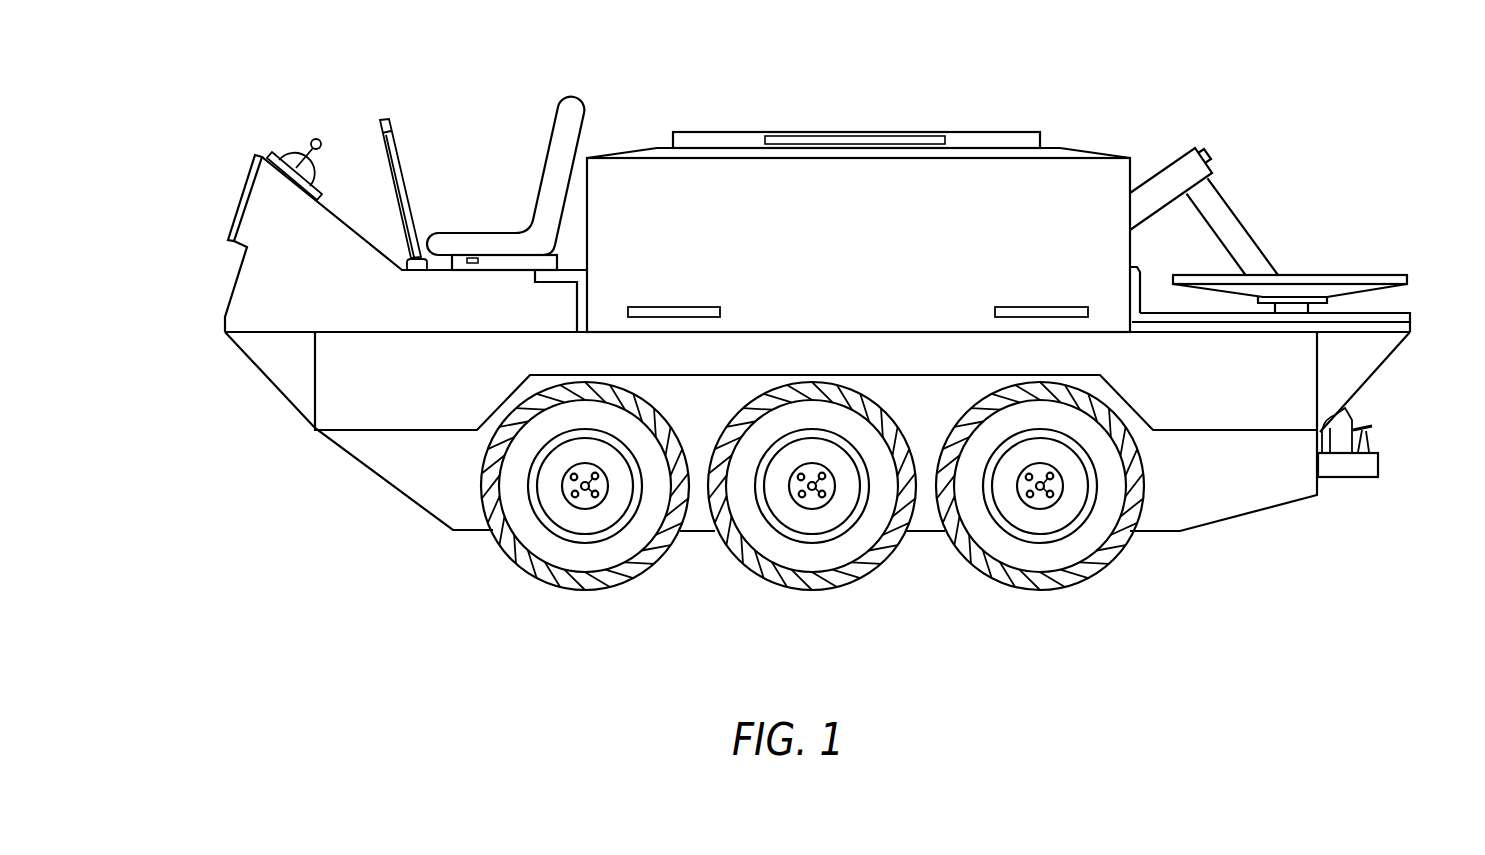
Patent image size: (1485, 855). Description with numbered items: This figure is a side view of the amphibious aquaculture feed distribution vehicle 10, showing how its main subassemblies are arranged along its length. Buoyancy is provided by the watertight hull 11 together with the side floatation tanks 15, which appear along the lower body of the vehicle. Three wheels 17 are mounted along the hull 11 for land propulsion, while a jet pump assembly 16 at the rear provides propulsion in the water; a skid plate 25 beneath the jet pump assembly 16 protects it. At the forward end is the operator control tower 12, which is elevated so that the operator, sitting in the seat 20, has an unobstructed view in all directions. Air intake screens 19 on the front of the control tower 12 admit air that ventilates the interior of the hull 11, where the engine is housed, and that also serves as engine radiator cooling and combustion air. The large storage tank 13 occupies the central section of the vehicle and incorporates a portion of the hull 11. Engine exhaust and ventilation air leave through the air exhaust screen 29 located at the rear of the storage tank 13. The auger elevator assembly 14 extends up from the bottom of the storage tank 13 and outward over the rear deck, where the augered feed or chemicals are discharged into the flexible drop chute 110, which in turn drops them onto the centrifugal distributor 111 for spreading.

The amphibious aquaculture feed distribution vehicle 10 is at (796, 345).
The watertight hull 11 is at (263, 379).
The operator control tower 12 is at (226, 290).
The storage tank 13 is at (637, 146).
The auger elevator assembly 14 is at (1158, 163).
The side floatation tanks 15 is at (389, 436).
The jet pump assembly 16 is at (1380, 437).
The wheels 17 is at (883, 562).
The air intake screens 19 is at (236, 197).
The seat 20 is at (553, 126).
The skid plate 25 is at (1373, 484).
The air exhaust screen 29 is at (1150, 276).
The flexible drop chute 110 is at (1227, 197).
The centrifugal distributor 111 is at (1371, 271).